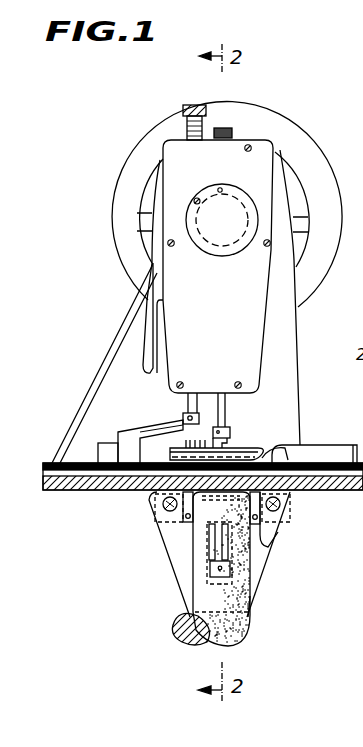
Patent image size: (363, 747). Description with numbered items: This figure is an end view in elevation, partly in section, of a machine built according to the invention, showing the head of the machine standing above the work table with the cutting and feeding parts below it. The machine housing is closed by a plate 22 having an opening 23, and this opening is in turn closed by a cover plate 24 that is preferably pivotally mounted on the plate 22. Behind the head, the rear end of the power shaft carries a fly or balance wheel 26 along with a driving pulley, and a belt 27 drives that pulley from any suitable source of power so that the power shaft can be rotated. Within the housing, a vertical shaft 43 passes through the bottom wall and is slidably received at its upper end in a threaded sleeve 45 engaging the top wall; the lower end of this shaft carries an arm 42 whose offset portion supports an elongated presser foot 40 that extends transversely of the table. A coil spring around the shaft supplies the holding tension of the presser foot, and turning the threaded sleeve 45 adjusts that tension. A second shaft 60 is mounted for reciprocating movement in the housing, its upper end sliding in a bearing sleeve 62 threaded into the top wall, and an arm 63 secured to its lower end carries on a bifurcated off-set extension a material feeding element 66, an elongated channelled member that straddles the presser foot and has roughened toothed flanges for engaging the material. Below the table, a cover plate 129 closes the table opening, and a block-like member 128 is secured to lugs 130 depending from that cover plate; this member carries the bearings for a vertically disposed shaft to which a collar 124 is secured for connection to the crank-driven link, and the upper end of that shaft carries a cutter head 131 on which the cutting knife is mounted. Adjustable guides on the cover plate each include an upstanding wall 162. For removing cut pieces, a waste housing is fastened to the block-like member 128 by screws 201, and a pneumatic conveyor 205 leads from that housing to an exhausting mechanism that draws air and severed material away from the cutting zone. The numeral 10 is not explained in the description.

The base plate 10 is at (342, 490).
The plate 22 is at (218, 266).
The opening 23 is at (213, 253).
The cover plate 24 is at (218, 195).
The fly or balance wheel 26 is at (110, 181).
The belt 27 is at (103, 368).
The presser foot 40 is at (283, 458).
The arm 42 is at (155, 425).
The vertical shaft 43 is at (192, 410).
The threaded sleeve 45 is at (190, 126).
The shaft 60 is at (222, 408).
The bearing sleeve 62 is at (246, 133).
The arm 63 is at (232, 432).
The material feeding element 66 is at (226, 452).
The collar 124 is at (250, 571).
The block-like member 128 is at (178, 580).
The cover plate 129 is at (78, 470).
The lugs 130 is at (158, 490).
The cutter head 131 is at (163, 510).
The upstanding wall 162 is at (104, 443).
The screws 201 is at (185, 527).
The pneumatic conveyor 205 is at (251, 595).